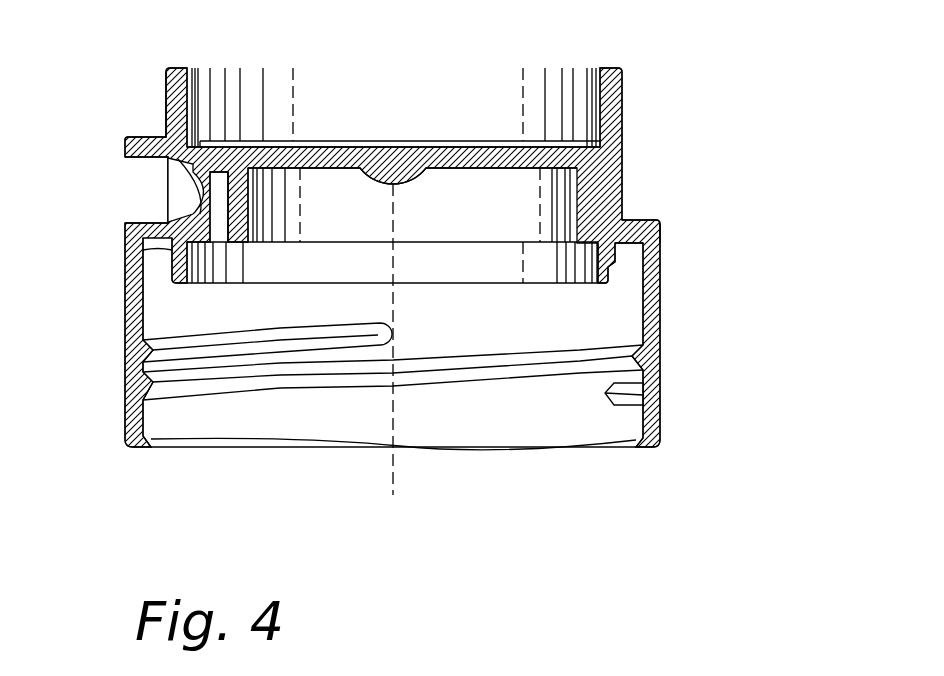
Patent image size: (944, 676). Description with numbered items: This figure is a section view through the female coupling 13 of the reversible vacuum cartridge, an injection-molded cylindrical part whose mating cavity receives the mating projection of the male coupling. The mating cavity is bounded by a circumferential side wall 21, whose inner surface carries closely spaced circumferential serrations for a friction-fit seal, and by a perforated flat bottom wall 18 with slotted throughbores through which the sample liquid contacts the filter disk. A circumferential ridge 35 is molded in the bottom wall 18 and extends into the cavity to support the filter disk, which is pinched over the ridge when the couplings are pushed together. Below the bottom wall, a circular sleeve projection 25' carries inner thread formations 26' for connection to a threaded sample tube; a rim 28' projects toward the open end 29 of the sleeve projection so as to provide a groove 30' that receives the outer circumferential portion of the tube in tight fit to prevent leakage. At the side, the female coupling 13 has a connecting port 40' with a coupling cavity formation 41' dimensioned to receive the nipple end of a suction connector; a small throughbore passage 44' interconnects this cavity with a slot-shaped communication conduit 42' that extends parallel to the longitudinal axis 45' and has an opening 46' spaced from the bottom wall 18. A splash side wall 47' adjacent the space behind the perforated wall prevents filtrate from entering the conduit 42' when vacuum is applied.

The female coupling 13 is at (690, 171).
The circumferential side wall 21 is at (613, 95).
The circumferential ridge 35 is at (600, 142).
The perforated flat bottom wall 18 is at (533, 160).
The connecting port 40' is at (98, 184).
The coupling cavity formation 41' is at (114, 122).
The throughbore passage 44' is at (163, 152).
The communication conduit 42' is at (281, 205).
The opening 46' is at (207, 247).
The splash side wall 47' is at (410, 205).
The rim 28' is at (328, 288).
The groove 30' is at (680, 240).
The circular sleeve projection 25' is at (95, 335).
The longitudinal axis 45' is at (311, 333).
The inner thread formation 26' is at (393, 419).
The open end 29 is at (617, 427).